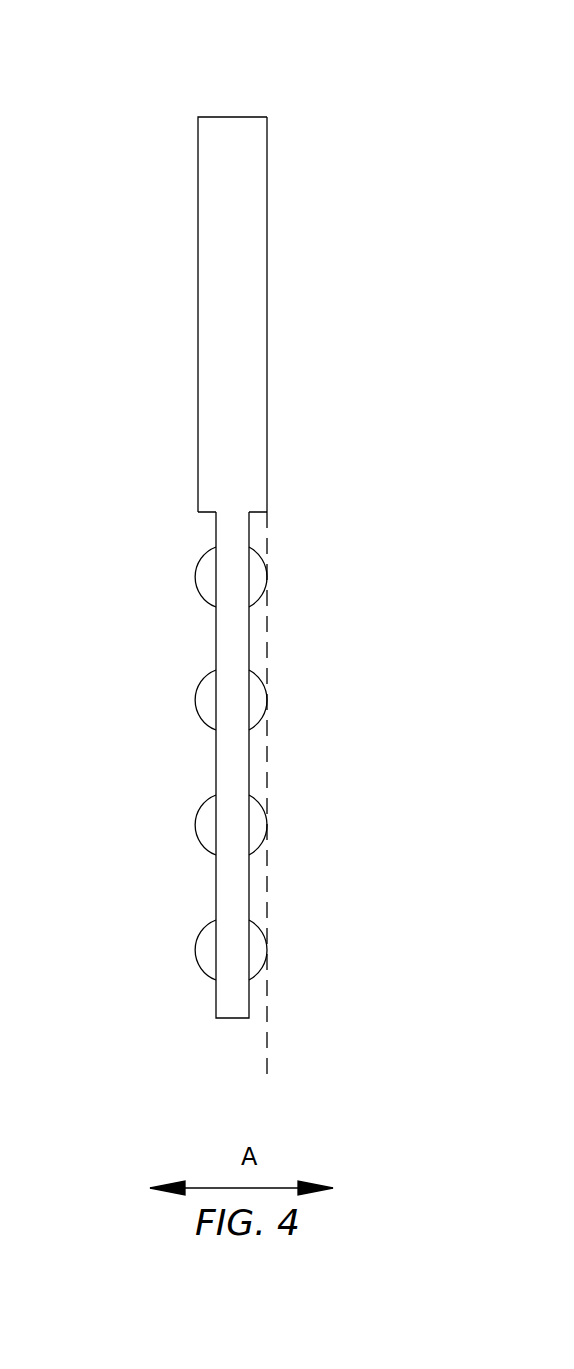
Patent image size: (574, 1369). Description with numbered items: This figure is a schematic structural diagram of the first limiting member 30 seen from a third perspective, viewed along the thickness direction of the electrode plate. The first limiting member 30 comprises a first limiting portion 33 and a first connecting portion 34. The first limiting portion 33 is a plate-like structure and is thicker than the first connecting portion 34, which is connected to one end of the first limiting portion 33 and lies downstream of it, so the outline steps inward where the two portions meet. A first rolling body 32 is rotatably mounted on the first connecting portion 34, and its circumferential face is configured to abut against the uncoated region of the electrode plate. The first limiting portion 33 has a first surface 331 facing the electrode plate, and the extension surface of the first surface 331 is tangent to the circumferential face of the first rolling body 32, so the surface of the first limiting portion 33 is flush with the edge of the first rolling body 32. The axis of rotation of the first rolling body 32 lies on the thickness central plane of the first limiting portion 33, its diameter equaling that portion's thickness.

The first limiting member 30 is at (244, 58).
The first limiting portion 33 is at (218, 300).
The first surface 331 is at (268, 365).
The first connecting portion 34 is at (222, 650).
The first rolling body 32 is at (207, 576).